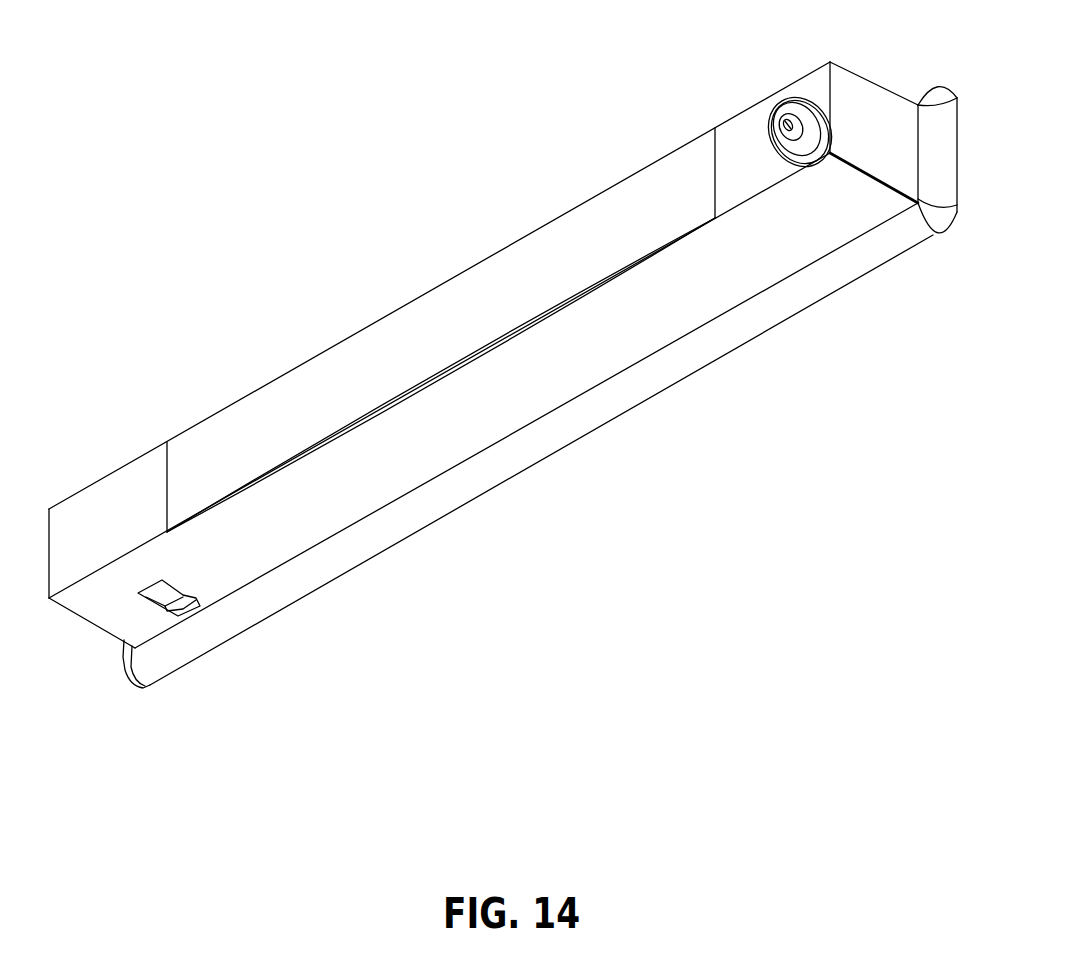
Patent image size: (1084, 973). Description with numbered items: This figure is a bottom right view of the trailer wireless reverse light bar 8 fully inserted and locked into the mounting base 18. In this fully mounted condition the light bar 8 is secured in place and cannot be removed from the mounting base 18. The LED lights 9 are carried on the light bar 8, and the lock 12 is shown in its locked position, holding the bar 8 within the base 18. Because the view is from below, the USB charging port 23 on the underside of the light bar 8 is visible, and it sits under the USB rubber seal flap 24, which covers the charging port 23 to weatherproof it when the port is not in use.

The trailer wireless reverse light bar 8 is at (782, 252).
The LED lights 9 is at (430, 288).
The lock 12 is at (787, 100).
The mounting base 18 is at (757, 340).
The USB charging port 23 is at (199, 610).
The USB rubber seal flap 24 is at (147, 602).